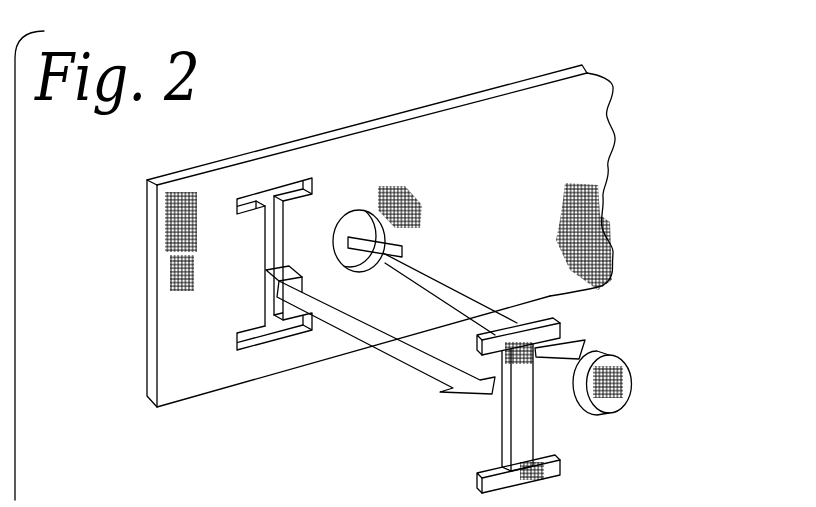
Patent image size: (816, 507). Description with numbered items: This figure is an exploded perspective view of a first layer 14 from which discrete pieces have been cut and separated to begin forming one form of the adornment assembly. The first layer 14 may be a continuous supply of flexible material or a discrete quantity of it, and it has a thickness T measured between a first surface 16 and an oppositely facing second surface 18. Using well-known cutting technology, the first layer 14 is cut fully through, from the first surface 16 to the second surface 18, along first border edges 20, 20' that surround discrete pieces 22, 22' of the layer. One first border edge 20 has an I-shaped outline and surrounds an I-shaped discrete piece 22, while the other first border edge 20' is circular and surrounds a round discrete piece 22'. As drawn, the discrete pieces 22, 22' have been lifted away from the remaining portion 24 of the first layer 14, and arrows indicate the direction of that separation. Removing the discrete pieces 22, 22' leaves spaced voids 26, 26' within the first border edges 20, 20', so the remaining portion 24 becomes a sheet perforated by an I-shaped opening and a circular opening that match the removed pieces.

The first layer 14 is at (573, 161).
The first surface 16 is at (575, 113).
The second surface 18 is at (498, 87).
The thickness T is at (398, 85).
The first border edge 20 is at (292, 250).
The first border edge 20' is at (403, 238).
The discrete piece 22 is at (490, 405).
The discrete piece 22' is at (638, 383).
The remaining portion 24 is at (553, 240).
The void 26 is at (339, 319).
The void 26' is at (465, 298).